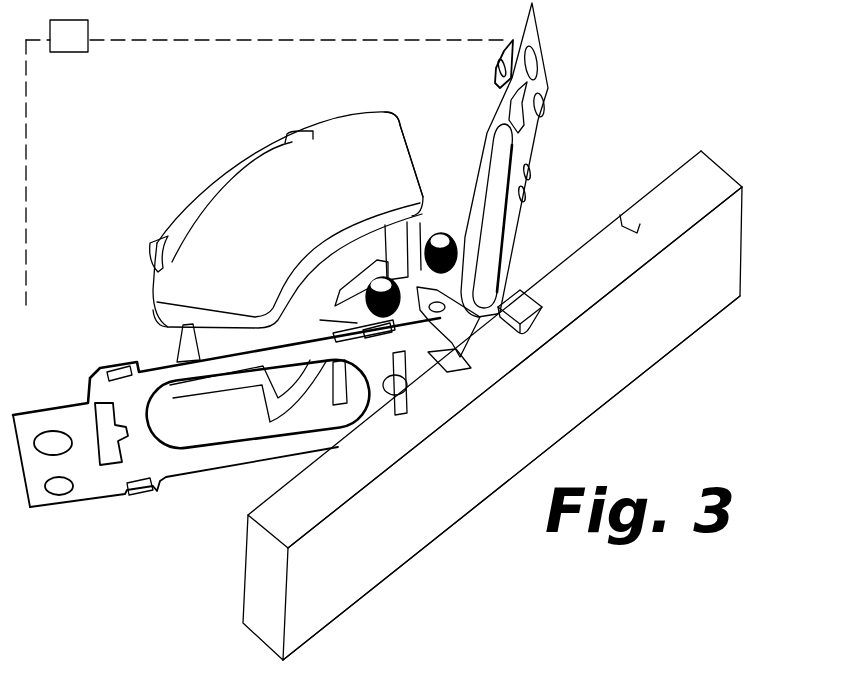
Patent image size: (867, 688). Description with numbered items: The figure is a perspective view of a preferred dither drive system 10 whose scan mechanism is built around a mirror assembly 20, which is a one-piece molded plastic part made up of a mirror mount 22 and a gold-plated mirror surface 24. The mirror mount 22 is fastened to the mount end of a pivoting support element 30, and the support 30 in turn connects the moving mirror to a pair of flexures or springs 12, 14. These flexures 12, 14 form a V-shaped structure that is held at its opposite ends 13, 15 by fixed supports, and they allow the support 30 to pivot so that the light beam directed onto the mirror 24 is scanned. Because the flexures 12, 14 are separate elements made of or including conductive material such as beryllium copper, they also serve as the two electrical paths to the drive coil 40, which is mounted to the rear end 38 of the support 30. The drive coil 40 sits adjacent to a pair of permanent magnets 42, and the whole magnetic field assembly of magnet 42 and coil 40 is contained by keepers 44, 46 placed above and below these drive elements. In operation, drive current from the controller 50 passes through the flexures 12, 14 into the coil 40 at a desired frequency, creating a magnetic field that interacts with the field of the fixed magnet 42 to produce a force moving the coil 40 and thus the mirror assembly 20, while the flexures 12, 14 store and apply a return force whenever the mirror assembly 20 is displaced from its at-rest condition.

The dither drive system 10 is at (702, 91).
The flexure 12 is at (525, 160).
The end of flexure 13 is at (528, 26).
The flexure 14 is at (226, 439).
The end of flexure 15 is at (42, 500).
The mirror assembly 20 is at (463, 409).
The mirror mount 22 is at (268, 499).
The mirror surface 24 is at (388, 568).
The pivoting support element 30 is at (545, 295).
The rear end of support 38 is at (150, 258).
The drive coil 40 is at (254, 201).
The permanent magnet 42 is at (190, 348).
The keeper 44 is at (177, 400).
The keeper 46 is at (364, 128).
The controller 50 is at (264, 162).